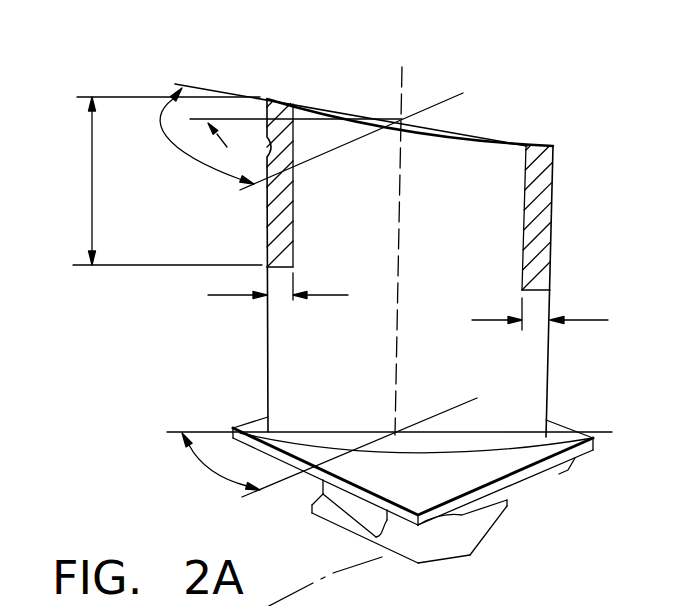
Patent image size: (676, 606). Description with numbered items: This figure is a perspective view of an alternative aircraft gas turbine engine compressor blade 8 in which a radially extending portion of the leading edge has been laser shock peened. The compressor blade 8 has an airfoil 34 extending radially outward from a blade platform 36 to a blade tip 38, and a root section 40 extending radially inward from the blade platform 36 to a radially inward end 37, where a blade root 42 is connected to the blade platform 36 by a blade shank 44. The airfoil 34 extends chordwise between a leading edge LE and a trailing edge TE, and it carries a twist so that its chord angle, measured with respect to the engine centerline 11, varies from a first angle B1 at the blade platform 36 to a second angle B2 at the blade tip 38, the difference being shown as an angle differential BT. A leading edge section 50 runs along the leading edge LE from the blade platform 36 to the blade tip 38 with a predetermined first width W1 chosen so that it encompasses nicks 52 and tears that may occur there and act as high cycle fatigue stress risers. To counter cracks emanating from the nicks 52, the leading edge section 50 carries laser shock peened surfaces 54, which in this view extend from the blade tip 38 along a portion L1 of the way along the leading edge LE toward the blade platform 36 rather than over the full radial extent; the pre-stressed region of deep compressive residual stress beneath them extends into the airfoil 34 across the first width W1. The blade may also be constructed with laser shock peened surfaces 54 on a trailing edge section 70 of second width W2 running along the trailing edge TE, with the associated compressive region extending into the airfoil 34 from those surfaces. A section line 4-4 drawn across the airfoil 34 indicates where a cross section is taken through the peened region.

The section line 4- 4 is at (252, 50).
The compressor blade 8 is at (583, 130).
The engine centerline 11 is at (300, 592).
The airfoil 34 is at (367, 263).
The blade platform 36 is at (483, 467).
The radially inward end 37 is at (356, 535).
The blade tip 38 is at (465, 131).
The root section 40 is at (358, 512).
The blade root 42 is at (437, 548).
The blade shank 44 is at (323, 488).
The leading edge section 50 is at (268, 203).
The nicks 52 is at (217, 164).
The laser shock peened surfaces 54 is at (291, 192).
The trailing edge section 70 is at (545, 242).
The angle differential BT is at (221, 81).
The trailing edge TE is at (553, 183).
The leading edge LE is at (267, 403).
The first angle B1 is at (210, 470).
The second angle B2 is at (166, 138).
The portion L1 is at (92, 164).
The first width W1 is at (224, 296).
The second width W2 is at (588, 320).